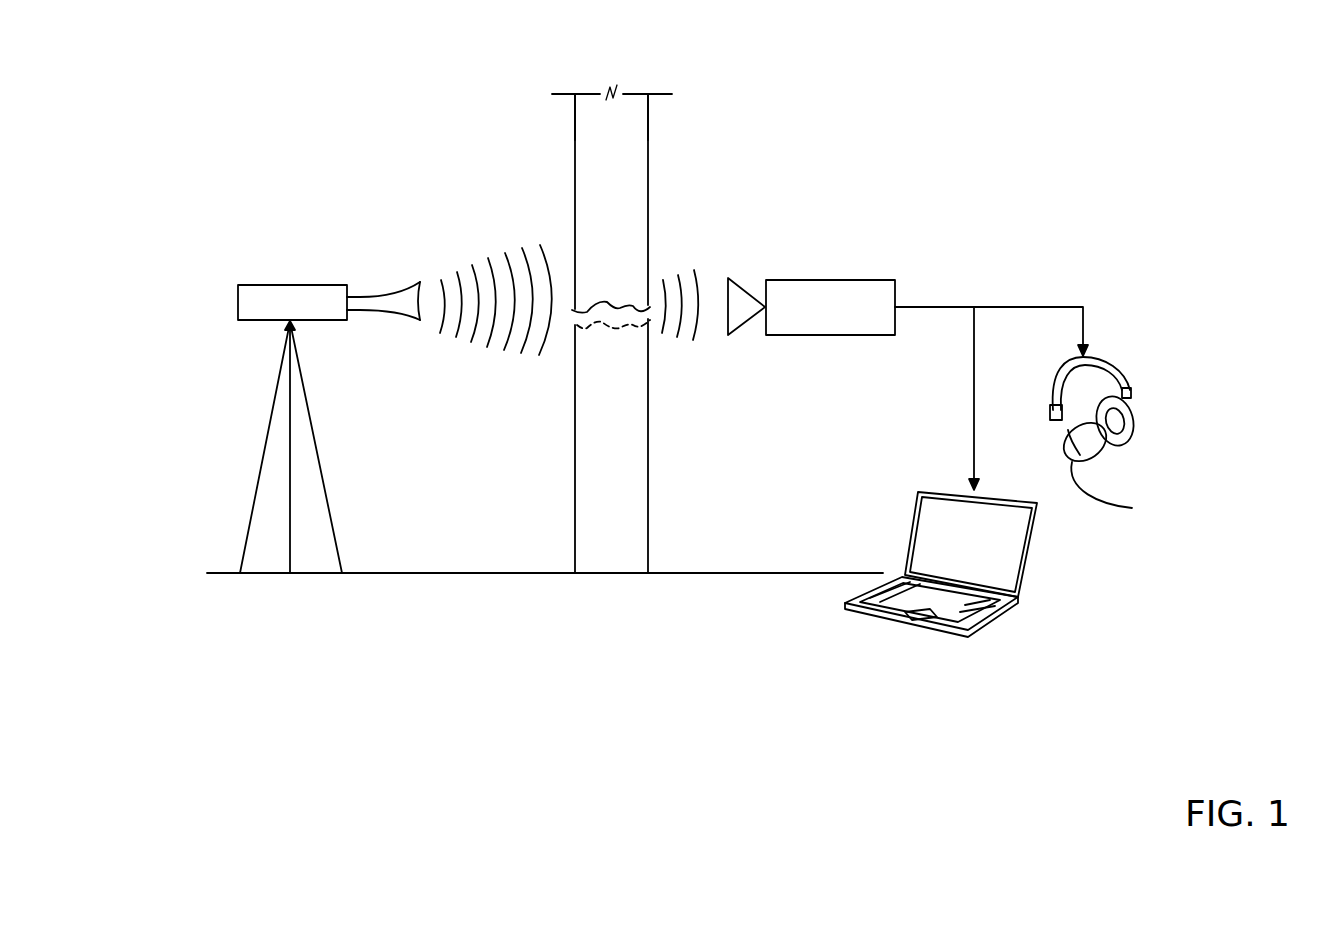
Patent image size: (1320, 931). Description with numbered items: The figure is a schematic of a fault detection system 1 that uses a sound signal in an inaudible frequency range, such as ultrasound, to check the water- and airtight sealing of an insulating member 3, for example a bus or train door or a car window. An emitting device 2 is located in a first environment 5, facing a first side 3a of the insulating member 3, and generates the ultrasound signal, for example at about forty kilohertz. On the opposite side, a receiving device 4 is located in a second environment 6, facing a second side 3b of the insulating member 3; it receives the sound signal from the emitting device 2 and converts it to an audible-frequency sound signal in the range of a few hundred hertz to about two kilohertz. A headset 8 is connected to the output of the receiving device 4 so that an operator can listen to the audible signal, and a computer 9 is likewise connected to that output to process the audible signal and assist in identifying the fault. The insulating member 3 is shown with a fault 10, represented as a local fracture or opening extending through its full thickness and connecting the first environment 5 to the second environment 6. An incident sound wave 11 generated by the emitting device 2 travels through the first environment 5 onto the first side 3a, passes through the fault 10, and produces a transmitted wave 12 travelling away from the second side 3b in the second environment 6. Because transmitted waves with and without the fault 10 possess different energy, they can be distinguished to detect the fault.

The fault detection system 1 is at (383, 143).
The emitting device 2 is at (260, 292).
The insulating member 3 is at (615, 306).
The first side 3a is at (576, 125).
The second side 3b is at (647, 125).
The receiving device 4 is at (825, 312).
The first environment 5 is at (448, 121).
The second environment 6 is at (781, 137).
The headset 8 is at (1099, 441).
The computer 9 is at (867, 605).
The fault 10 is at (597, 310).
The incident sound wave 11 is at (532, 364).
The transmitted wave 12 is at (692, 337).